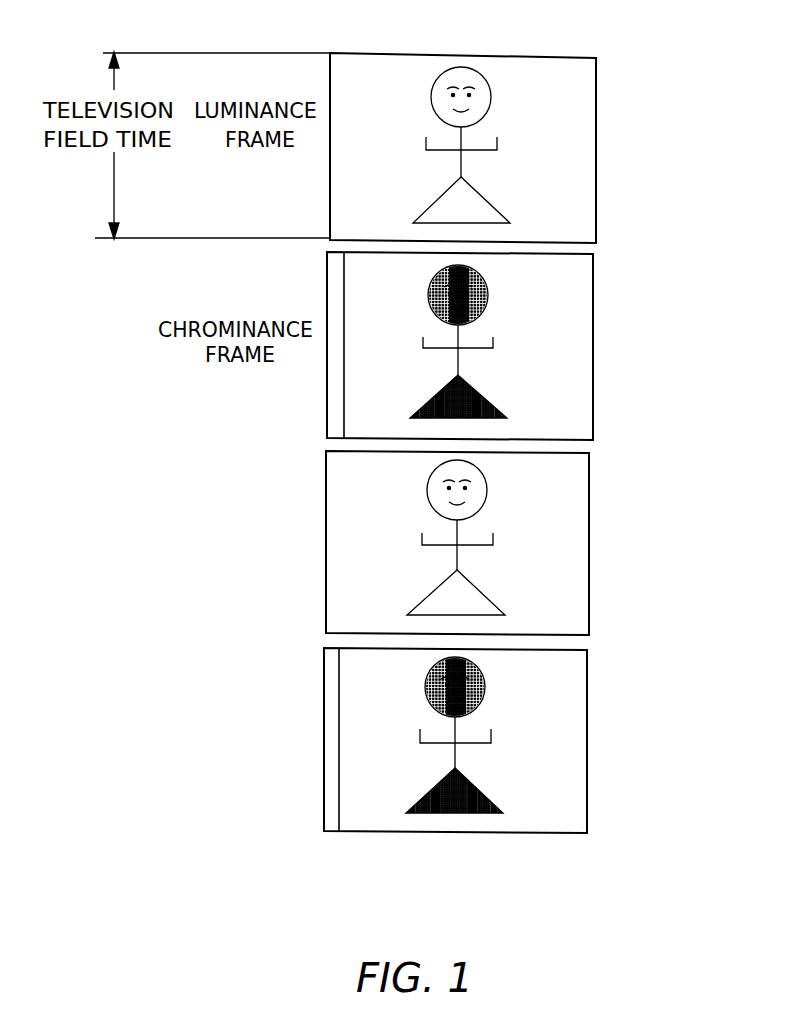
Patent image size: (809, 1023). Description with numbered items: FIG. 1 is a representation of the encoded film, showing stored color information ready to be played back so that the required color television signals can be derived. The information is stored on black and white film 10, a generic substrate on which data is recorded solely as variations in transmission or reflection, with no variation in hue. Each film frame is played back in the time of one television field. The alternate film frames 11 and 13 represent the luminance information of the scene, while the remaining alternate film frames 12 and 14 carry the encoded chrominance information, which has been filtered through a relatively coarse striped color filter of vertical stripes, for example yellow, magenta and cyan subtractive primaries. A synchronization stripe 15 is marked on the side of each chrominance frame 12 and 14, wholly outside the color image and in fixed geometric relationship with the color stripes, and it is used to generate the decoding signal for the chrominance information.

The black and white film 10 is at (543, 53).
The luminance film frame 11 is at (597, 97).
The chrominance film frame 12 is at (594, 333).
The luminance film frame 13 is at (591, 537).
The chrominance film frame 14 is at (589, 710).
The synchronization stripe 15 is at (337, 723).